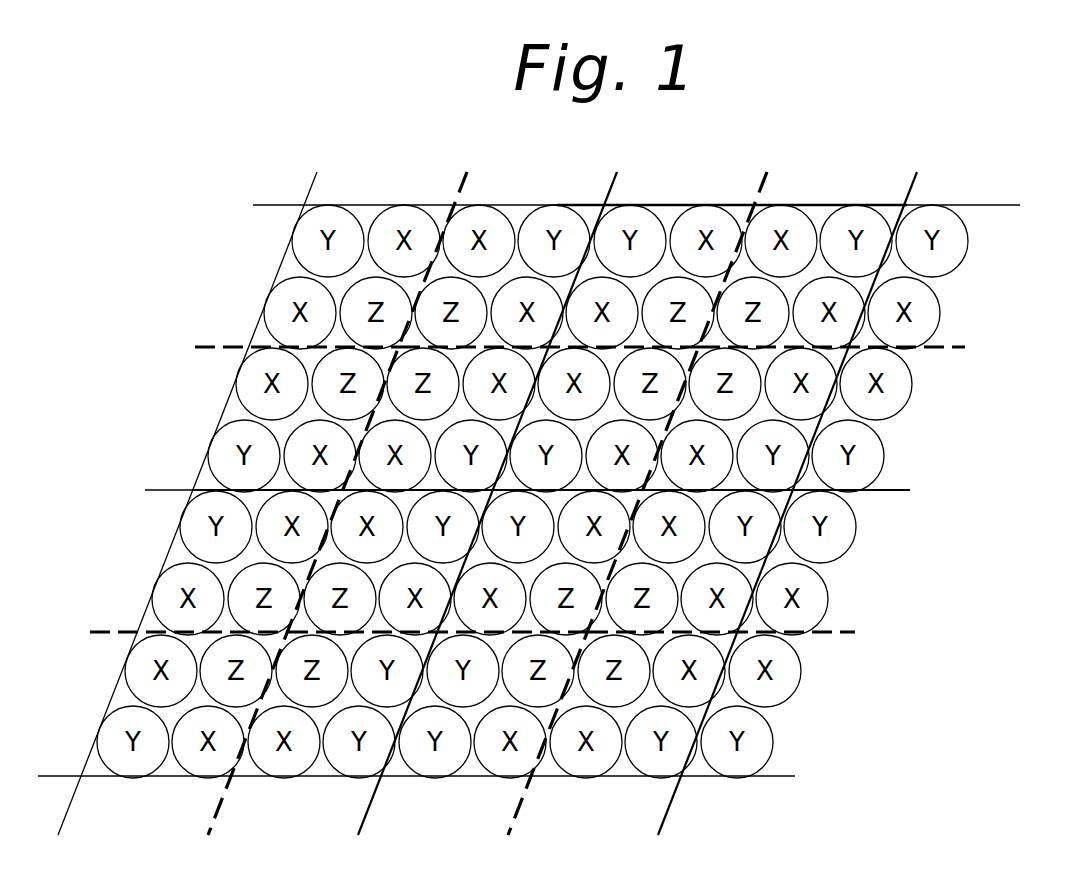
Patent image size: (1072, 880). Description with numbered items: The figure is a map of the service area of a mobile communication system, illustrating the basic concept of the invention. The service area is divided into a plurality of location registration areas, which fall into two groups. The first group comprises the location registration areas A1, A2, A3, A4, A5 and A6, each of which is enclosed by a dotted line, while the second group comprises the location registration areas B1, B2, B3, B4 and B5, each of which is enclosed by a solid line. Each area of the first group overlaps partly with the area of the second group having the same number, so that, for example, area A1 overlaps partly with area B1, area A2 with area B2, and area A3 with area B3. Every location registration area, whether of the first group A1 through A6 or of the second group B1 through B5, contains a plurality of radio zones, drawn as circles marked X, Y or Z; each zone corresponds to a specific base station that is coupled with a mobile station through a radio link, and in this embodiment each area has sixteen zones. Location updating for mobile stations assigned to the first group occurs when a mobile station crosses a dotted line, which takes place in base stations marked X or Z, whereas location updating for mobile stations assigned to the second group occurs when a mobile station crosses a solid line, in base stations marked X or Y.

The location registration area A1 is at (222, 346).
The location registration area A2 is at (545, 343).
The location registration area A3 is at (955, 345).
The location registration area A4 is at (103, 631).
The location registration area A5 is at (422, 640).
The location registration area A6 is at (852, 631).
The location registration area B1 is at (163, 490).
The location registration area B2 is at (205, 490).
The location registration area B3 is at (717, 489).
The location registration area B4 is at (163, 777).
The location registration area B5 is at (608, 777).